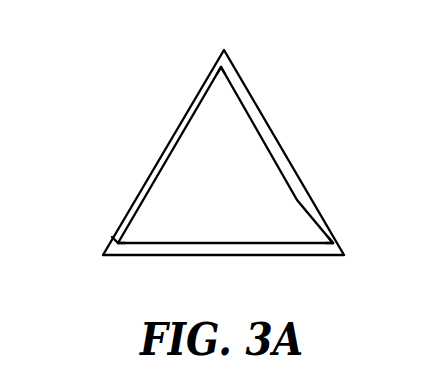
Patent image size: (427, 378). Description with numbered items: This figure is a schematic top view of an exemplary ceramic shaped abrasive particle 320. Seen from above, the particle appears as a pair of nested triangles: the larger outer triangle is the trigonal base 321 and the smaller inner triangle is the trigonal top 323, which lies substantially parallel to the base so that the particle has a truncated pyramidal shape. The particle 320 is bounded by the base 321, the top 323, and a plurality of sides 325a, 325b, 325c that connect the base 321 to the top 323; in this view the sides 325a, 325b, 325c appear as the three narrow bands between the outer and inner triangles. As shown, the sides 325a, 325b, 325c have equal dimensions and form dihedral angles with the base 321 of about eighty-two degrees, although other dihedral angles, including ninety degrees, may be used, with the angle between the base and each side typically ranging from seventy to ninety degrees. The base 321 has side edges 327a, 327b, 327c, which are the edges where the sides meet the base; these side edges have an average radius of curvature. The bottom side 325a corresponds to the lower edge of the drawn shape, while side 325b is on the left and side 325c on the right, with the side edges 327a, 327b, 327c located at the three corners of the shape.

The ceramic shaped abrasive particle 320 is at (289, 52).
The trigonal base 321 is at (272, 134).
The trigonal top 323 is at (244, 194).
The side 325a is at (247, 249).
The side 325b is at (174, 141).
The side 325c is at (298, 181).
The side edge 327a is at (117, 244).
The side edge 327b is at (222, 67).
The side edge 327c is at (333, 243).